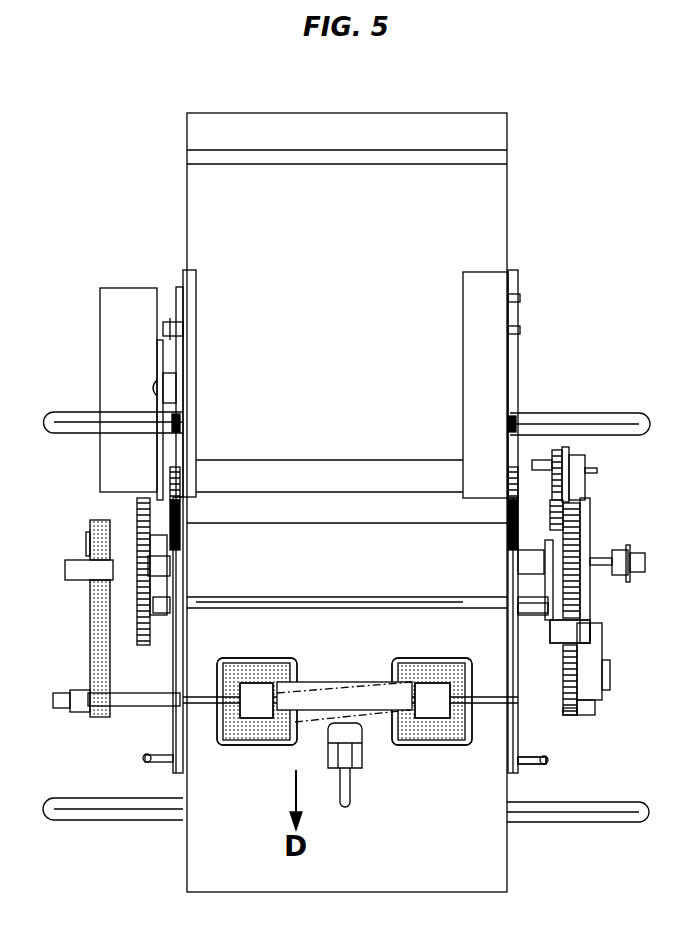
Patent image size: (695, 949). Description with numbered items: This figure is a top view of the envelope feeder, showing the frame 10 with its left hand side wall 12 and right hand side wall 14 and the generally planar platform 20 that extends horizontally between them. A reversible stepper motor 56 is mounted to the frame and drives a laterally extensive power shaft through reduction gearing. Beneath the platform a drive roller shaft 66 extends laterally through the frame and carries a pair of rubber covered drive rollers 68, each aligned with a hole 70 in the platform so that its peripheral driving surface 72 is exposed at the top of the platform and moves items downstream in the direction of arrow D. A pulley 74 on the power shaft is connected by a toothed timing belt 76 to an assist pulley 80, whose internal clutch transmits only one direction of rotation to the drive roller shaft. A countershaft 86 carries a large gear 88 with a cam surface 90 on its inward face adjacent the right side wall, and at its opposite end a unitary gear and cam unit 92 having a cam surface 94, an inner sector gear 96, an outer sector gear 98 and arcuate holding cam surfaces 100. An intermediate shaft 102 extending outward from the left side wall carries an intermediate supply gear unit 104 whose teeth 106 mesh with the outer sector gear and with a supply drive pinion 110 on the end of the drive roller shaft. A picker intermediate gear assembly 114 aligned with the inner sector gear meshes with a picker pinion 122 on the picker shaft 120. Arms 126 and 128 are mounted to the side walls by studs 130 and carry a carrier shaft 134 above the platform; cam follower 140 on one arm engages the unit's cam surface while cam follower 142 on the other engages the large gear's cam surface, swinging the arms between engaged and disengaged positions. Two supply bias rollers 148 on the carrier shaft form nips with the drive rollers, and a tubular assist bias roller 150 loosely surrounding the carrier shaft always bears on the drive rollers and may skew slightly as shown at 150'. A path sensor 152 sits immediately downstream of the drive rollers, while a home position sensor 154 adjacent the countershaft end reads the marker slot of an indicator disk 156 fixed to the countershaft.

The frame 10 is at (170, 868).
The left hand side wall 12 is at (505, 790).
The right hand side wall 14 is at (183, 828).
The platform 20 is at (480, 835).
The stepper motor 56 is at (107, 358).
The drive roller shaft 66 is at (125, 700).
The drive rollers 68 is at (263, 742).
The hole 70 is at (222, 740).
The peripheral driving surface 72 is at (250, 672).
The pulley 74 is at (88, 540).
The toothed timing belt 76 is at (97, 620).
The assist pulley 80 is at (70, 700).
The countershaft 86 is at (70, 568).
The large gear 88 is at (140, 625).
The cam surface 90 is at (160, 620).
The gear and cam unit 92 is at (595, 512).
The cam surface 94 is at (590, 632).
The inner sector gear 96 is at (520, 565).
The outer sector gear 98 is at (578, 555).
The arcuate holding cam surfaces 100 is at (535, 605).
The intermediate shaft 102 is at (610, 680).
The intermediate supply gear unit 104 is at (595, 708).
The teeth 106 is at (570, 665).
The supply drive pinion 110 is at (572, 712).
The picker intermediate gear assembly 114 is at (575, 510).
The picker shaft 120 is at (585, 478).
The picker pinion 122 is at (553, 455).
The arm 126 is at (518, 740).
The arm 128 is at (178, 730).
The studs 130 is at (162, 565).
The carrier shaft 134 is at (198, 700).
The cam follower 140 is at (518, 605).
The cam follower 142 is at (162, 607).
The supply bias rollers 148 is at (255, 700).
The tubular assist bias roller 150 is at (344, 662).
The skewed position of assist bias roller 150' is at (344, 681).
The path sensor 152 is at (345, 780).
The home position sensor 154 is at (645, 563).
The indicator disk 156 is at (631, 555).